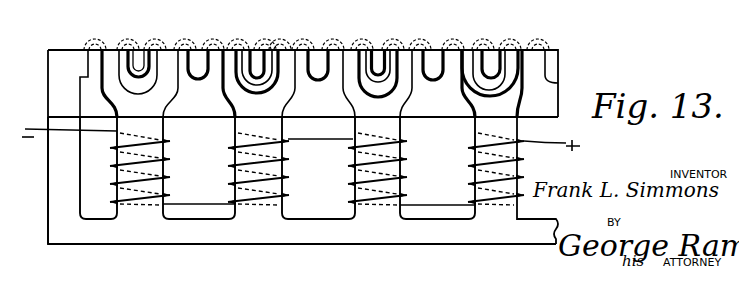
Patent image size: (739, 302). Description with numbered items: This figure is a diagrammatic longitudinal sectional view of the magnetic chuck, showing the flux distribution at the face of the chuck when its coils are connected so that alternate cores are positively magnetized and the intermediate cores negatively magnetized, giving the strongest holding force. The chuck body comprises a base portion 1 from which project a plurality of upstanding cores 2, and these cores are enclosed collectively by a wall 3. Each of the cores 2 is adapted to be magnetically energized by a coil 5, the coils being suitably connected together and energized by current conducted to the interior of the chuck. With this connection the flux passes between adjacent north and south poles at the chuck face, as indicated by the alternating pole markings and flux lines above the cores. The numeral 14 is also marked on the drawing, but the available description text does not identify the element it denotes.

The base portion 1 is at (250, 247).
The upstanding cores 2 is at (243, 130).
The wall 3 is at (53, 168).
The coil 5 is at (232, 166).
The pole piece assembly 14 is at (319, 109).